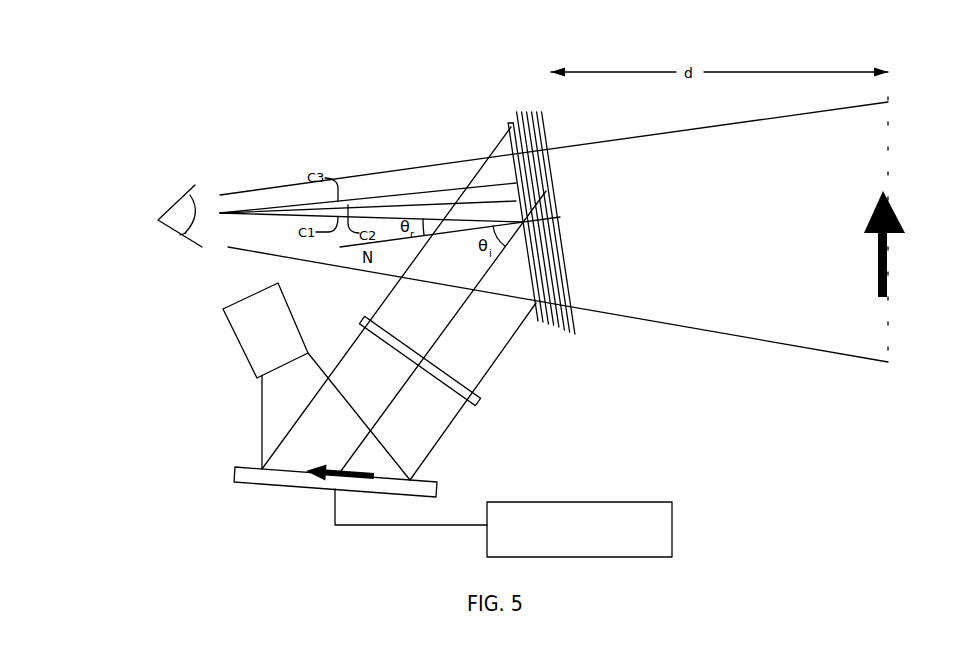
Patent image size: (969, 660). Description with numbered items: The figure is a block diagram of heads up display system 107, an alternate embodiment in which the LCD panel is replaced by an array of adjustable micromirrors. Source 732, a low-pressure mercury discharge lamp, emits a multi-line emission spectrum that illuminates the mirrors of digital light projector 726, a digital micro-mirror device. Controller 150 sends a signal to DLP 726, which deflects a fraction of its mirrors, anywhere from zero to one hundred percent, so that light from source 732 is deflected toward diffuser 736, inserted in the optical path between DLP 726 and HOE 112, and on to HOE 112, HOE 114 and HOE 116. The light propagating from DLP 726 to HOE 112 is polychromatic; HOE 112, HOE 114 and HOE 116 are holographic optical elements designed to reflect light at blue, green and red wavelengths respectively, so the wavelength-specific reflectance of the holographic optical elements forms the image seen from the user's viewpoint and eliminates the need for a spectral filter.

The heads up panel system 107 is at (243, 128).
The holographic optical element 112 is at (508, 125).
The holographic optical element 114 is at (524, 112).
The holographic optical element 116 is at (574, 212).
The controller 150 is at (877, 260).
The source 732 is at (243, 357).
The diffuser 736 is at (470, 403).
The digital light projector 726 is at (437, 483).